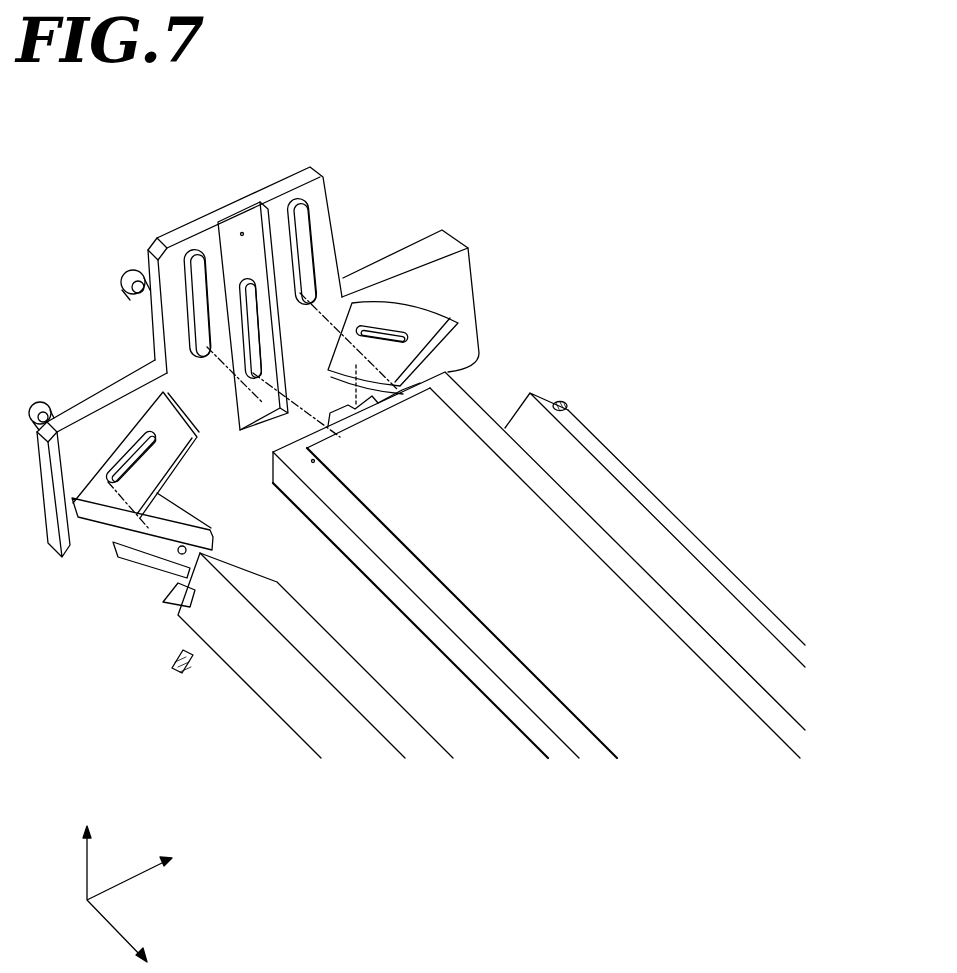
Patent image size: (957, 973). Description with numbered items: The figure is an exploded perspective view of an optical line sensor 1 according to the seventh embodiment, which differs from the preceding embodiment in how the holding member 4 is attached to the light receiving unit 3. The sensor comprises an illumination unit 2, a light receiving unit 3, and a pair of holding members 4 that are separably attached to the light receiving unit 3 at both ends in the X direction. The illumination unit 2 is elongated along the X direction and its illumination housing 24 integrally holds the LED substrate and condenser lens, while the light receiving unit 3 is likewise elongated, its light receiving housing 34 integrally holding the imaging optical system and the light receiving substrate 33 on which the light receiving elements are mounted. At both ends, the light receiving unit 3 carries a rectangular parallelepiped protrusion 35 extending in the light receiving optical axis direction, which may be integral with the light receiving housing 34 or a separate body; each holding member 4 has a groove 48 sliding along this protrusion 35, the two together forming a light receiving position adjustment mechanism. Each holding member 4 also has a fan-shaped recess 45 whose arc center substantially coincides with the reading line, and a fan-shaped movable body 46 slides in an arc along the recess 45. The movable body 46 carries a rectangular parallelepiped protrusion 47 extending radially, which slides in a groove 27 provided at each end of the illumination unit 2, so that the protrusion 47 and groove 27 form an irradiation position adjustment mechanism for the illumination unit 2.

The optical line sensor 1 is at (494, 150).
The illumination unit 2 is at (620, 452).
The light receiving unit 3 is at (690, 598).
The holding member 4 is at (473, 275).
The illumination housing 24 is at (592, 437).
The groove 27 is at (557, 402).
The light receiving substrate 33 is at (580, 565).
The light receiving housing 34 is at (572, 518).
The rectangular parallelepiped protrusion 35 is at (372, 316).
The fan-shaped recess 45 is at (418, 320).
The fan-shaped movable body 46 is at (128, 542).
The rectangular parallelepiped protrusion 47 is at (102, 534).
The groove 48 is at (243, 213).